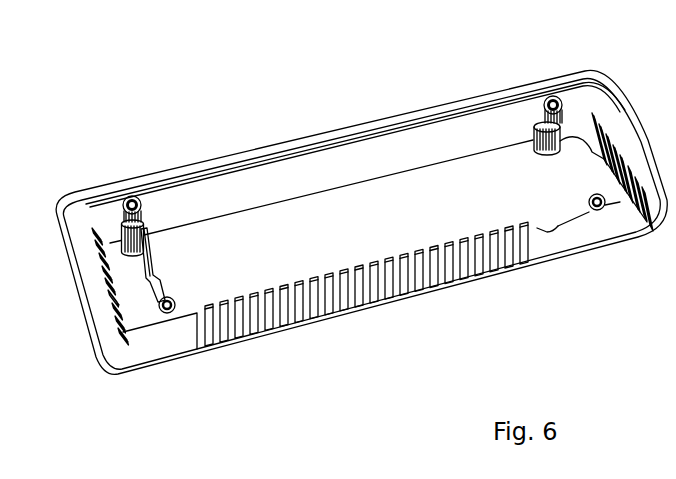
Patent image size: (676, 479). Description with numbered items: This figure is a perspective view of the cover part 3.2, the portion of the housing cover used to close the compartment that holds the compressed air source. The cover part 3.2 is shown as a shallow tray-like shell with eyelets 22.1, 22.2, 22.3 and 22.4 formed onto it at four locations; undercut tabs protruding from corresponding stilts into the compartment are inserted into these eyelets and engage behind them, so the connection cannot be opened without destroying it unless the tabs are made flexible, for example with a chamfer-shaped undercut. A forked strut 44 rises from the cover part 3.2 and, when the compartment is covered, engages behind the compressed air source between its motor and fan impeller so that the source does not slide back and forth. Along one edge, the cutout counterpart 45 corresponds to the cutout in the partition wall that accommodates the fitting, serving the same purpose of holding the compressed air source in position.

The cover part 3.2 is at (366, 120).
The eyelet 22.1 is at (166, 313).
The eyelet 22.2 is at (128, 202).
The eyelet 22.3 is at (550, 99).
The eyelet 22.4 is at (597, 210).
The forked strut 44 is at (151, 253).
The cutout counterpart 45 is at (538, 233).